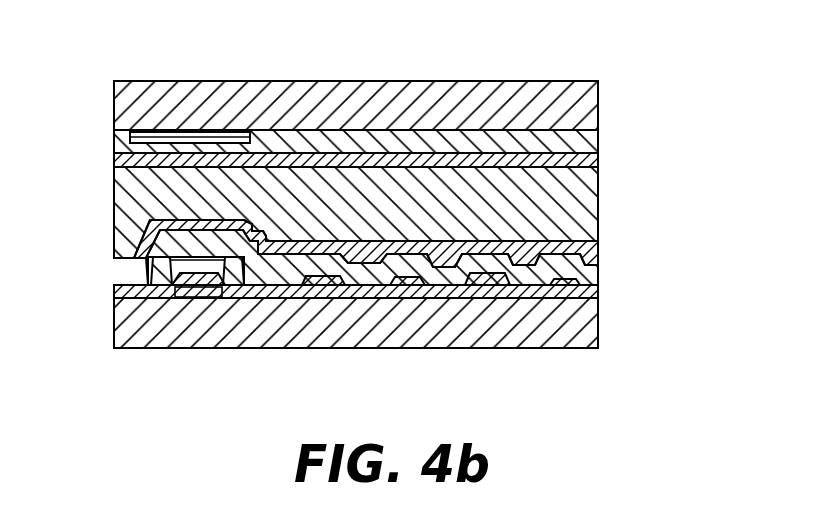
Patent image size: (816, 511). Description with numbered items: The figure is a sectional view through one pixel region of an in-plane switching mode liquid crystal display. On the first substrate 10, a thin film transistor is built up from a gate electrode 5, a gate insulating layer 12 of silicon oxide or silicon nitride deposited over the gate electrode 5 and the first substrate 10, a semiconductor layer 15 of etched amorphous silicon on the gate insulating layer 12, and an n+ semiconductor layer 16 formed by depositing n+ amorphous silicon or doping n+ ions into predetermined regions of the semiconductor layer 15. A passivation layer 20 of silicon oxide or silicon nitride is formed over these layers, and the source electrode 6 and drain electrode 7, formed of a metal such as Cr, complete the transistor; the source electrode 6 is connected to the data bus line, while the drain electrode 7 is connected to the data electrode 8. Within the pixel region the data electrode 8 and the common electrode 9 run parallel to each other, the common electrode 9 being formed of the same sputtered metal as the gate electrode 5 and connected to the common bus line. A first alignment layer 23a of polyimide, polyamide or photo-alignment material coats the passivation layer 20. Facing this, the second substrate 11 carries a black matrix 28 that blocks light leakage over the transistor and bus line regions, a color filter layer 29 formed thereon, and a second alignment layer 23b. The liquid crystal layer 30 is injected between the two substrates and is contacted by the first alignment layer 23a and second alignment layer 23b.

The gate electrode 5 is at (188, 298).
The source electrode 6 is at (150, 278).
The drain electrode 7 is at (240, 290).
The data electrode 8 is at (405, 290).
The common electrode 9 is at (328, 298).
The first substrate 10 is at (562, 334).
The second substrate 11 is at (570, 81).
The gate insulating layer 12 is at (598, 288).
The semiconductor layer 15 is at (140, 305).
The n+ semiconductor layer 16 is at (227, 290).
The passivation layer 20 is at (598, 270).
The first alignment layer 23a is at (598, 238).
The second alignment layer 23b is at (598, 160).
The black matrix 28 is at (222, 132).
The color filter layer 29 is at (590, 140).
The liquid crystal layer 30 is at (142, 208).